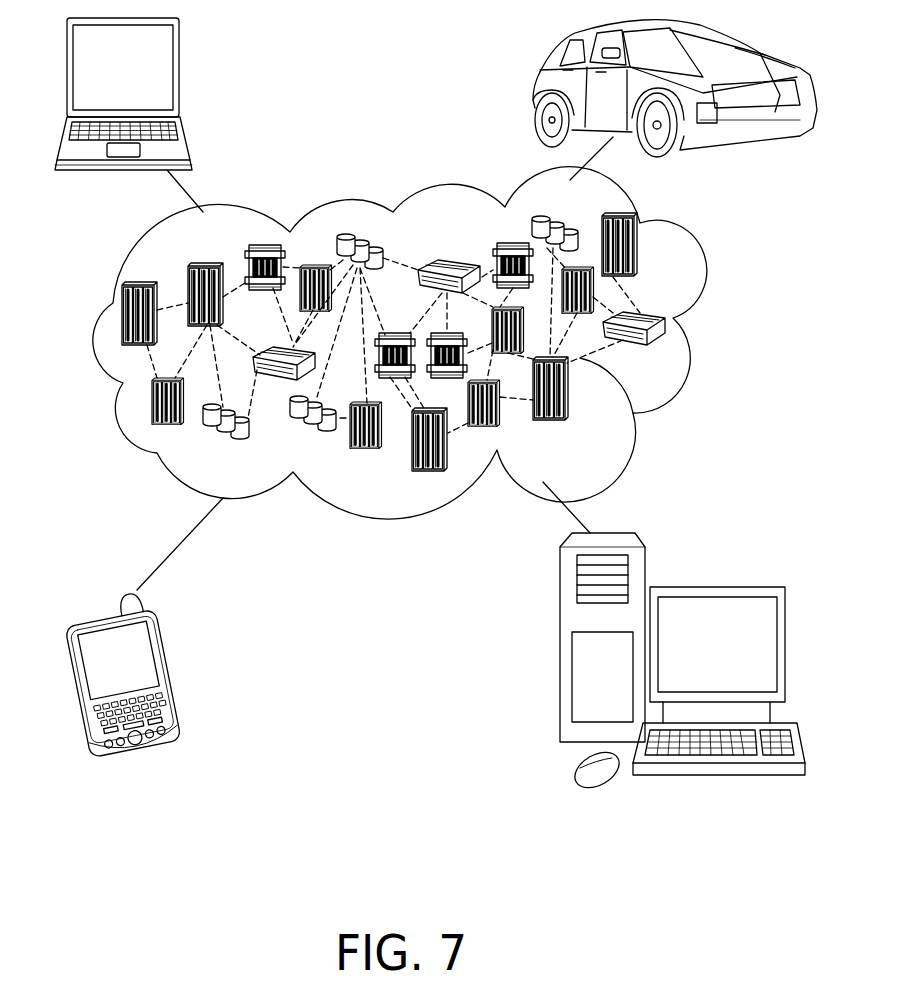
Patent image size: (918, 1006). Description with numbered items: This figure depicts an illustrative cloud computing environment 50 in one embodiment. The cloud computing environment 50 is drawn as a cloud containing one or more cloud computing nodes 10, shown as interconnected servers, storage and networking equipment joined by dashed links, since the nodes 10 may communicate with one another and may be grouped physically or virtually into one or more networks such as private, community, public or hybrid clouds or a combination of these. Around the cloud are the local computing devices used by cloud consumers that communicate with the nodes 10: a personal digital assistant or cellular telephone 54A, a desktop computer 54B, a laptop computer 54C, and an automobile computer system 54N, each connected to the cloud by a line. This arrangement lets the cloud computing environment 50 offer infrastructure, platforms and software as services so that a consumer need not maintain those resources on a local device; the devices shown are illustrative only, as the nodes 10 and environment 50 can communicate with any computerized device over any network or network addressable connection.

The cloud computing node 10 is at (668, 355).
The cloud computing environment 50 is at (717, 323).
The personal digital assistant or cellular telephone 54A is at (170, 672).
The desktop computer 54B is at (712, 580).
The laptop computer 54C is at (178, 73).
The automobile computer system 54N is at (536, 90).